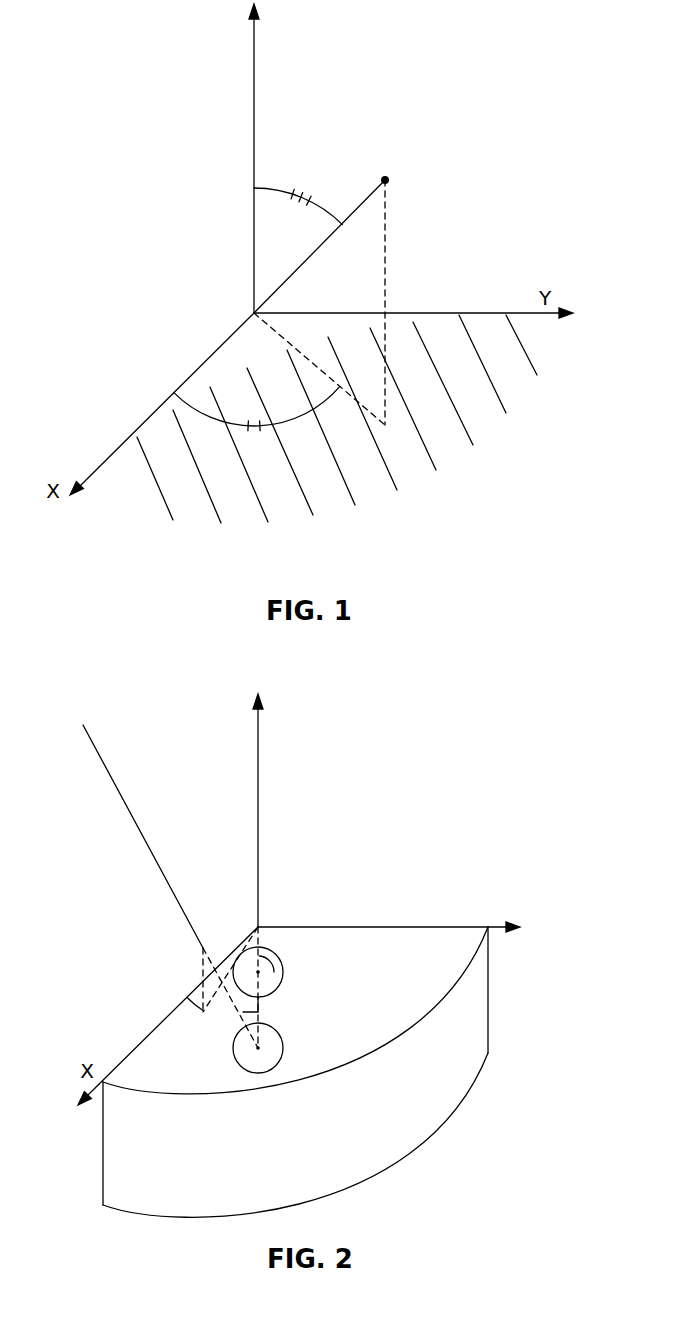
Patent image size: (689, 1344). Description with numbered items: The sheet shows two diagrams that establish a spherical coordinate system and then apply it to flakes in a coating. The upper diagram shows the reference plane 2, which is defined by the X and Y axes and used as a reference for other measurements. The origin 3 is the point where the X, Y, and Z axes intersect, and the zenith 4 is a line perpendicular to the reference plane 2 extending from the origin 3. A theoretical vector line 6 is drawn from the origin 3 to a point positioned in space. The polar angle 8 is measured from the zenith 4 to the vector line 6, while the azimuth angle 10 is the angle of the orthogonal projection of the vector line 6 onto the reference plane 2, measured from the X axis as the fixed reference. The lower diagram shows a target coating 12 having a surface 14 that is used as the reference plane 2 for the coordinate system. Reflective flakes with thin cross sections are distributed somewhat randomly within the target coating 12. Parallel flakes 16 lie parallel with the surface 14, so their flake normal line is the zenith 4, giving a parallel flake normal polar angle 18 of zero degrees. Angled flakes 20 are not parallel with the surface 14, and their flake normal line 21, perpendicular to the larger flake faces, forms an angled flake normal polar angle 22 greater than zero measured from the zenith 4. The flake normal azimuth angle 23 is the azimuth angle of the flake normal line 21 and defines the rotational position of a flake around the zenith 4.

In FIG. 1, the reference plane 2 is at (477, 388).
In FIG. 2, the reference plane 2 is at (413, 955).
In FIG. 1, the origin 3 is at (253, 313).
In FIG. 2, the origin 3 is at (257, 927).
In FIG. 1, the zenith 4 is at (255, 107).
In FIG. 2, the zenith 4 is at (259, 780).
In FIG. 1, the vector line 6 is at (380, 177).
In FIG. 1, the polar angle 8 is at (293, 189).
In FIG. 1, the azimuth angle 10 is at (291, 428).
In FIG. 2, the target coating 12 is at (478, 1009).
In FIG. 2, the surface 14 is at (378, 937).
In FIG. 2, the parallel flakes 16 is at (283, 970).
In FIG. 2, the parallel flake normal polar angle 18 is at (261, 955).
In FIG. 2, the angled flakes 20 is at (283, 1045).
In FIG. 2, the flake normal line 21 is at (113, 781).
In FIG. 2, the angled flake normal polar angle 22 is at (247, 1019).
In FIG. 2, the flake normal azimuth angle 23 is at (196, 1005).